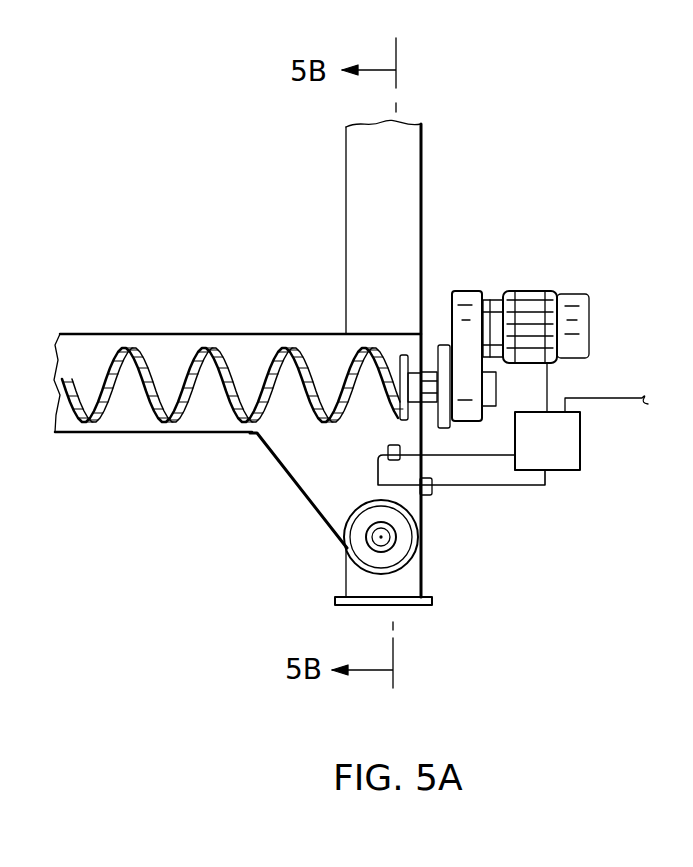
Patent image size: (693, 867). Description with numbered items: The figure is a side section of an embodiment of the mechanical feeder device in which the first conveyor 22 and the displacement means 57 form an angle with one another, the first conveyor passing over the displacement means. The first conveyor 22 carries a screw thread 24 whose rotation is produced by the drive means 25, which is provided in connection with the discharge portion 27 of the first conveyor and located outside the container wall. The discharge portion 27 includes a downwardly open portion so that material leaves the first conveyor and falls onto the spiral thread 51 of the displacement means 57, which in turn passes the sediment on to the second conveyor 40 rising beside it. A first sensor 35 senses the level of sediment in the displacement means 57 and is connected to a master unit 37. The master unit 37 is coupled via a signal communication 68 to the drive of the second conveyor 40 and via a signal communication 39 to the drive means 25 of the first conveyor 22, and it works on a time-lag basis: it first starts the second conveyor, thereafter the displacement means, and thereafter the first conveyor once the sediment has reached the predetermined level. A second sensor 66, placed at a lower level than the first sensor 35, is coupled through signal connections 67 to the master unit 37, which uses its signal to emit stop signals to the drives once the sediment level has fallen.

The first conveyor 22 is at (112, 333).
The screw thread 24 is at (147, 413).
The drive means 25 is at (534, 290).
The discharge portion 27 is at (318, 365).
The first sensor 35 is at (386, 453).
The master unit 37 is at (582, 452).
The signal communication 39 is at (548, 383).
The second conveyor 40 is at (413, 183).
The spiral thread 51 is at (368, 543).
The displacement means 57 is at (413, 548).
The second sensor 66 is at (432, 492).
The signal connections 67 is at (530, 486).
The signal communication 68 is at (620, 399).